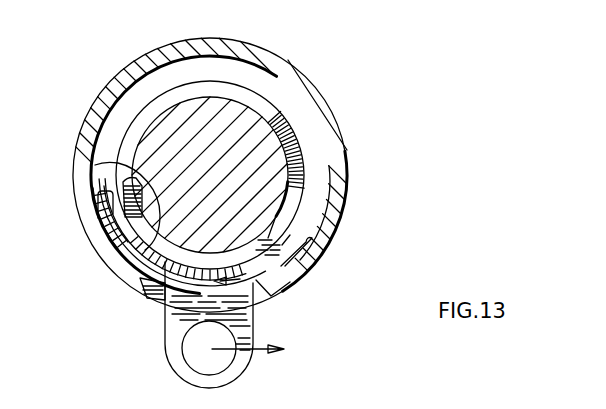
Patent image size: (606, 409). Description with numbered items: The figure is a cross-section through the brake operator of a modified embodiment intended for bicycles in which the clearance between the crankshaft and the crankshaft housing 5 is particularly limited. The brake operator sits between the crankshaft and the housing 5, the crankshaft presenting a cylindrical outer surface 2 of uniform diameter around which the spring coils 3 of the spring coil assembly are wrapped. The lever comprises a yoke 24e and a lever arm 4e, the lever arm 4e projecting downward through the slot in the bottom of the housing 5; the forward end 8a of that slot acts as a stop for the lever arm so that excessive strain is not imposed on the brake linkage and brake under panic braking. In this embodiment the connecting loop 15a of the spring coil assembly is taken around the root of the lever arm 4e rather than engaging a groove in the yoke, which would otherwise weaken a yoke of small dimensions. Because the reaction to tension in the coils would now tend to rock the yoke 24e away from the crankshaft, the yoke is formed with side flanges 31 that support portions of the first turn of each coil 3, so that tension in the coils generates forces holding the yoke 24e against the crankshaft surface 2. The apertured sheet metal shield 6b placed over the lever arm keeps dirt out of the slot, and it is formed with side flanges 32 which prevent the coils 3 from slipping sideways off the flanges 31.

The cylindrical outer surface 2 is at (280, 205).
The spring coils 3 is at (296, 133).
The crankshaft housing 5 is at (310, 79).
The side flanges 31 is at (103, 160).
The side flanges 32 is at (108, 200).
The shield 6b is at (117, 245).
The forward end of the slot 8a is at (147, 293).
The lever arm 4e is at (165, 320).
The loop 15a is at (280, 288).
The yoke 24e is at (290, 228).